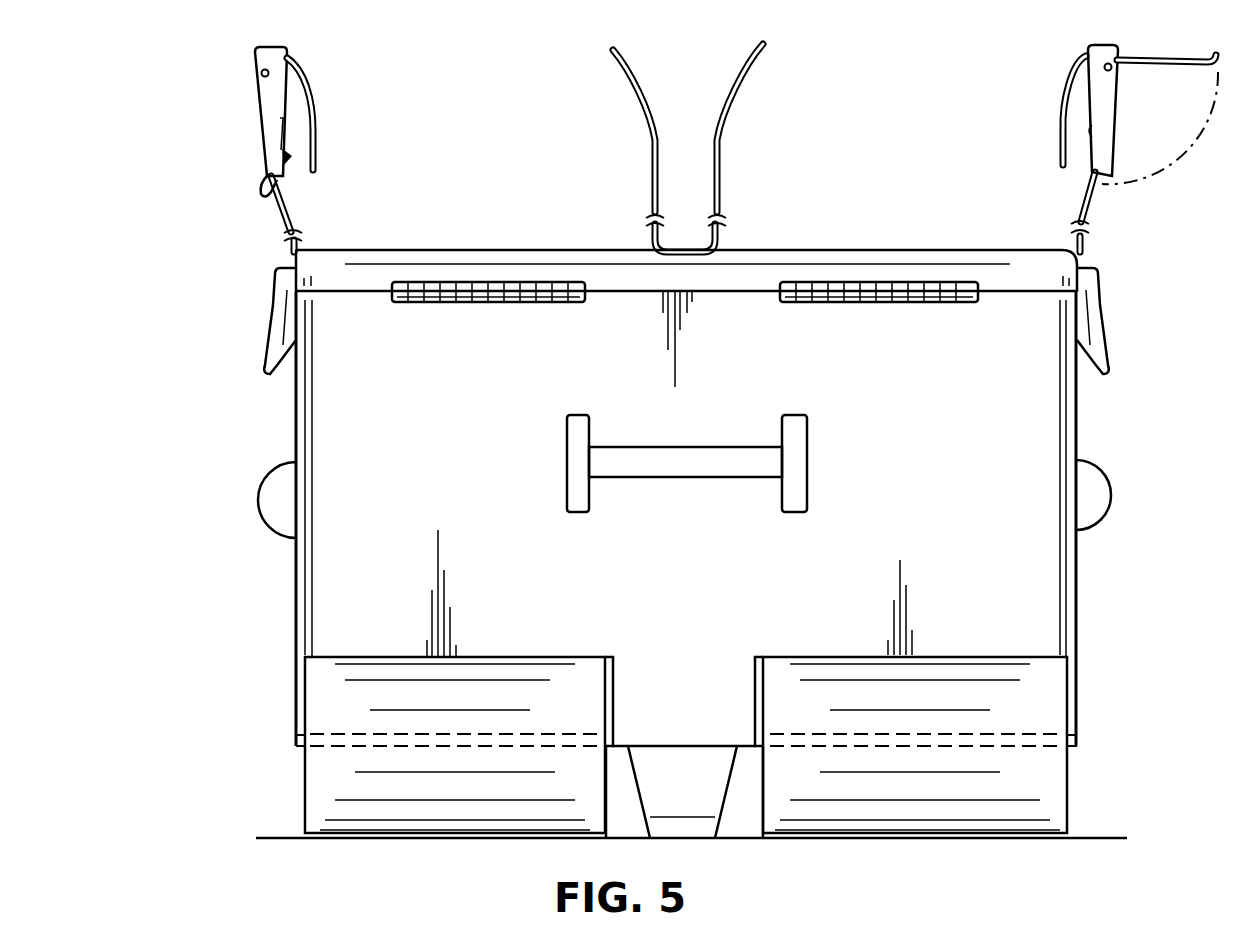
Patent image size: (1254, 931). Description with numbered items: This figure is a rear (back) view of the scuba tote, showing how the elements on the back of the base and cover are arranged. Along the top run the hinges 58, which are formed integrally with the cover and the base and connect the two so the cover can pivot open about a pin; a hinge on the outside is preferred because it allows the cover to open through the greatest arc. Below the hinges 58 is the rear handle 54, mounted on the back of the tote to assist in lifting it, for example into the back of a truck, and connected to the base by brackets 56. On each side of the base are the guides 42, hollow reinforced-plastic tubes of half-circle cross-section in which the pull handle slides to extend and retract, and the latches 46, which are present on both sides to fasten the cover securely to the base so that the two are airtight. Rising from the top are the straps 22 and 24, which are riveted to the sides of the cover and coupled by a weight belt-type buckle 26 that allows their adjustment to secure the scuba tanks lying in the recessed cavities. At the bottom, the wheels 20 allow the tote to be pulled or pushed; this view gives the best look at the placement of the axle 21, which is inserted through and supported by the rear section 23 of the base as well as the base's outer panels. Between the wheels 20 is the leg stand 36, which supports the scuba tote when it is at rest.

The wheels 20 is at (318, 784).
The axle 21 is at (850, 745).
The strap 22 is at (648, 92).
The rear section 23 is at (650, 680).
The strap 24 is at (732, 102).
The buckle 26 is at (252, 88).
The leg stand 36 is at (713, 790).
The guides 42 is at (258, 488).
The latch 46 is at (275, 330).
The rear handle 54 is at (693, 447).
The brackets 56 is at (578, 415).
The hinges 58 is at (562, 290).